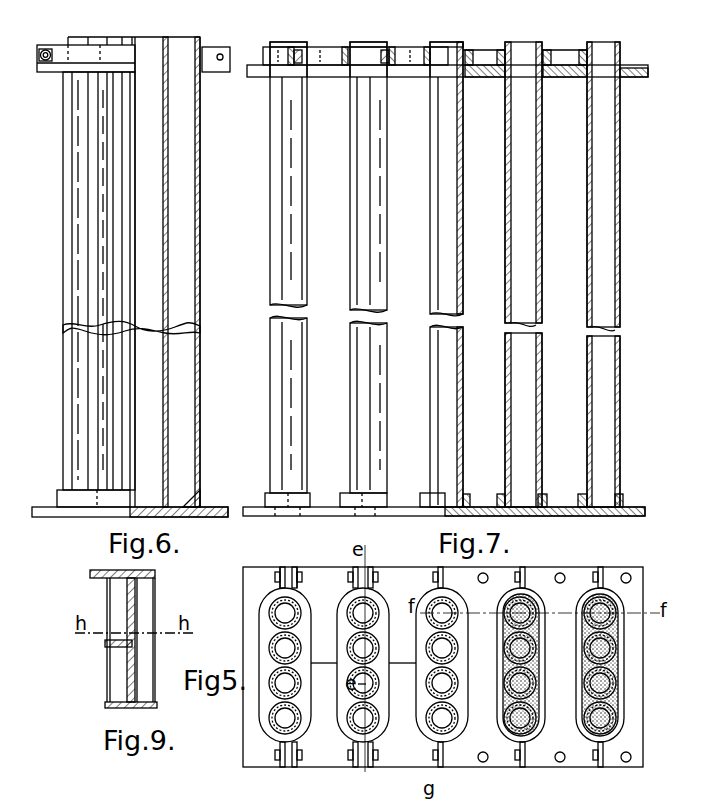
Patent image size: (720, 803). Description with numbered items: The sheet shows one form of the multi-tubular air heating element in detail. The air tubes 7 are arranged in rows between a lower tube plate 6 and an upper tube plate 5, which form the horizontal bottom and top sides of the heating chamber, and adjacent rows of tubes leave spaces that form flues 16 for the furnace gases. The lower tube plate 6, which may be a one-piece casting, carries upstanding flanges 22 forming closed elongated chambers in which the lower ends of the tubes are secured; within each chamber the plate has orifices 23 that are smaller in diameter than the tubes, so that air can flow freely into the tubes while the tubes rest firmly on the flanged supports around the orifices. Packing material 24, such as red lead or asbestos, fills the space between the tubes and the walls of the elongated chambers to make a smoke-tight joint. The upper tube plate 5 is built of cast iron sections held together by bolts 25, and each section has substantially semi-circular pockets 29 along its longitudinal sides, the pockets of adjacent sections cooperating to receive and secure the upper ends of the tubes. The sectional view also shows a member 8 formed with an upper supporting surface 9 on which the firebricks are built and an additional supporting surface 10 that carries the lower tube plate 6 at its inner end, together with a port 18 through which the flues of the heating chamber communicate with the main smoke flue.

In FIG. 6, the upper tube plate 5 is at (115, 52).
In FIG. 7, the upper tube plate 5 is at (405, 58).
In FIG. 5, the upper tube plate 5 is at (258, 770).
In FIG. 6, the lower tube plate 6 is at (78, 512).
In FIG. 7, the lower tube plate 6 is at (317, 513).
In FIG. 5, the lower tube plate 6 is at (602, 755).
In FIG. 6, the air tube 7 is at (108, 222).
In FIG. 7, the air tube 7 is at (293, 200).
In FIG. 5, the air tube 7 is at (272, 652).
In FIG. 9, the member 8 is at (147, 607).
In FIG. 5, the member 8 is at (504, 802).
In FIG. 9, the upper supporting surface 9 is at (155, 572).
In FIG. 9, the additional supporting surface 10 is at (107, 648).
In FIG. 7, the flue 16 is at (327, 348).
In FIG. 5, the flue 16 is at (532, 663).
In FIG. 9, the port 18 is at (127, 605).
In FIG. 5, the port 18 is at (295, 757).
In FIG. 6, the upstanding flange 22 is at (62, 497).
In FIG. 7, the upstanding flange 22 is at (268, 498).
In FIG. 5, the upstanding flange 22 is at (525, 742).
In FIG. 6, the orifice 23 is at (190, 503).
In FIG. 7, the orifice 23 is at (600, 507).
In FIG. 5, the packing material 24 is at (622, 663).
In FIG. 6, the bolt 25 is at (45, 49).
In FIG. 7, the bolt 25 is at (358, 56).
In FIG. 5, the bolt 25 is at (350, 758).
In FIG. 5, the semi-circular pocket 29 is at (349, 600).